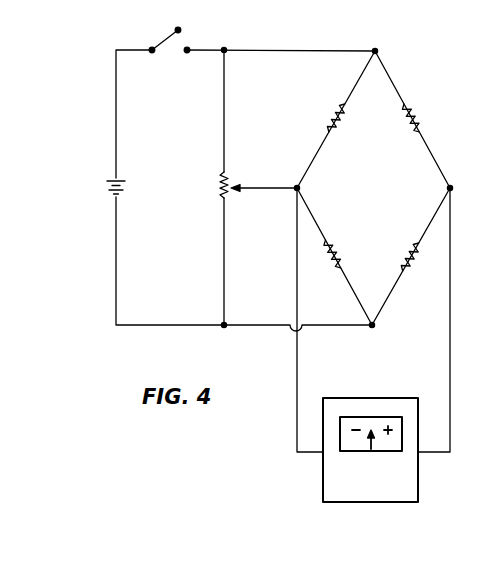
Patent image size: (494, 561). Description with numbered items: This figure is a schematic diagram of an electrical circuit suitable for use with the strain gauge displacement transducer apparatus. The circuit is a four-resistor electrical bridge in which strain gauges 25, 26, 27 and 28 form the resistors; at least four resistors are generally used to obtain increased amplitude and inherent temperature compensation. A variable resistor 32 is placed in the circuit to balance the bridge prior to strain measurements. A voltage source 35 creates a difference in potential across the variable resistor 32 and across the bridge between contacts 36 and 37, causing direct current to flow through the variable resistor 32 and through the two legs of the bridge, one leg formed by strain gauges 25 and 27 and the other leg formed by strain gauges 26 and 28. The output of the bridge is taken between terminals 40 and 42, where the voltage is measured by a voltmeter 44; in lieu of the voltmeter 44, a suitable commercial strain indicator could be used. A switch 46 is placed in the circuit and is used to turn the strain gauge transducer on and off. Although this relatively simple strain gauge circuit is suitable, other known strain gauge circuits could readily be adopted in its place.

The strain gauge 25 is at (333, 118).
The strain gauge 26 is at (413, 262).
The strain gauge 27 is at (336, 254).
The strain gauge 28 is at (416, 120).
The variable resistor 32 is at (218, 190).
The voltage source 35 is at (128, 181).
The contact 36 is at (378, 51).
The contact 37 is at (375, 327).
The terminal 40 is at (300, 188).
The terminal 42 is at (447, 188).
The voltmeter 44 is at (323, 478).
The switch 46 is at (172, 40).